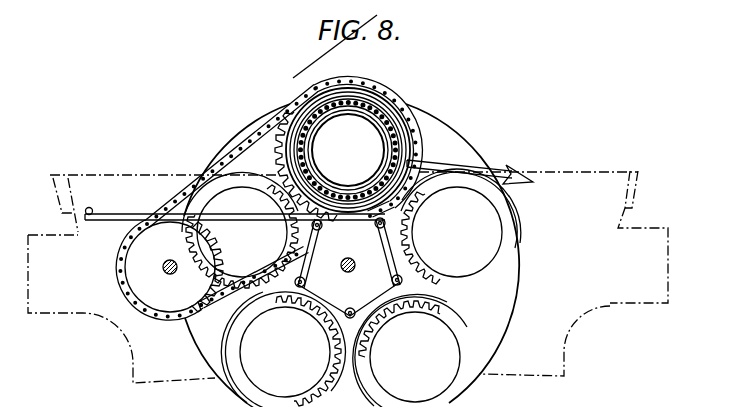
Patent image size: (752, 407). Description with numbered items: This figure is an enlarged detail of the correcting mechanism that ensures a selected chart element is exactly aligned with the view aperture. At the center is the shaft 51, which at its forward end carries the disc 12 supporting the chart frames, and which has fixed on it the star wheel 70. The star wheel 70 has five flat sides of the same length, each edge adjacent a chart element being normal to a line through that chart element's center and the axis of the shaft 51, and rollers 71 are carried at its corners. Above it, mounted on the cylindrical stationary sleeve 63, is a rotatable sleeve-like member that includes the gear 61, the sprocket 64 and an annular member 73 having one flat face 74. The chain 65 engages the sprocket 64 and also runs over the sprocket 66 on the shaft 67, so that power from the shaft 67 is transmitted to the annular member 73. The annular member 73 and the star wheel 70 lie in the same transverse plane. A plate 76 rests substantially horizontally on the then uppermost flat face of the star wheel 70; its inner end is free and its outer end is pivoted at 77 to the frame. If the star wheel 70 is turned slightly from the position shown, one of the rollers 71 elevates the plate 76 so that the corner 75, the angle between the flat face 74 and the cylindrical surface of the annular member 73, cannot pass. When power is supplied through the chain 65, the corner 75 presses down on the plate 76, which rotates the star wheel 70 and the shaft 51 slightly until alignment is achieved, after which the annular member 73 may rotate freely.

The disc 12 is at (517, 297).
The shaft 51 is at (352, 252).
The gear 61 is at (364, 378).
The cylindrical stationary sleeve 63 is at (350, 108).
The sprocket 64 is at (285, 133).
The chain 65 is at (268, 127).
The sprocket 66 is at (162, 302).
The shaft 67 is at (166, 262).
The star wheel 70 is at (327, 296).
The rollers 71 is at (387, 340).
The annular member 73 is at (396, 123).
The flat face 74 is at (328, 207).
The corner 75 is at (404, 212).
The plate 76 is at (237, 217).
The pivot 77 is at (91, 209).